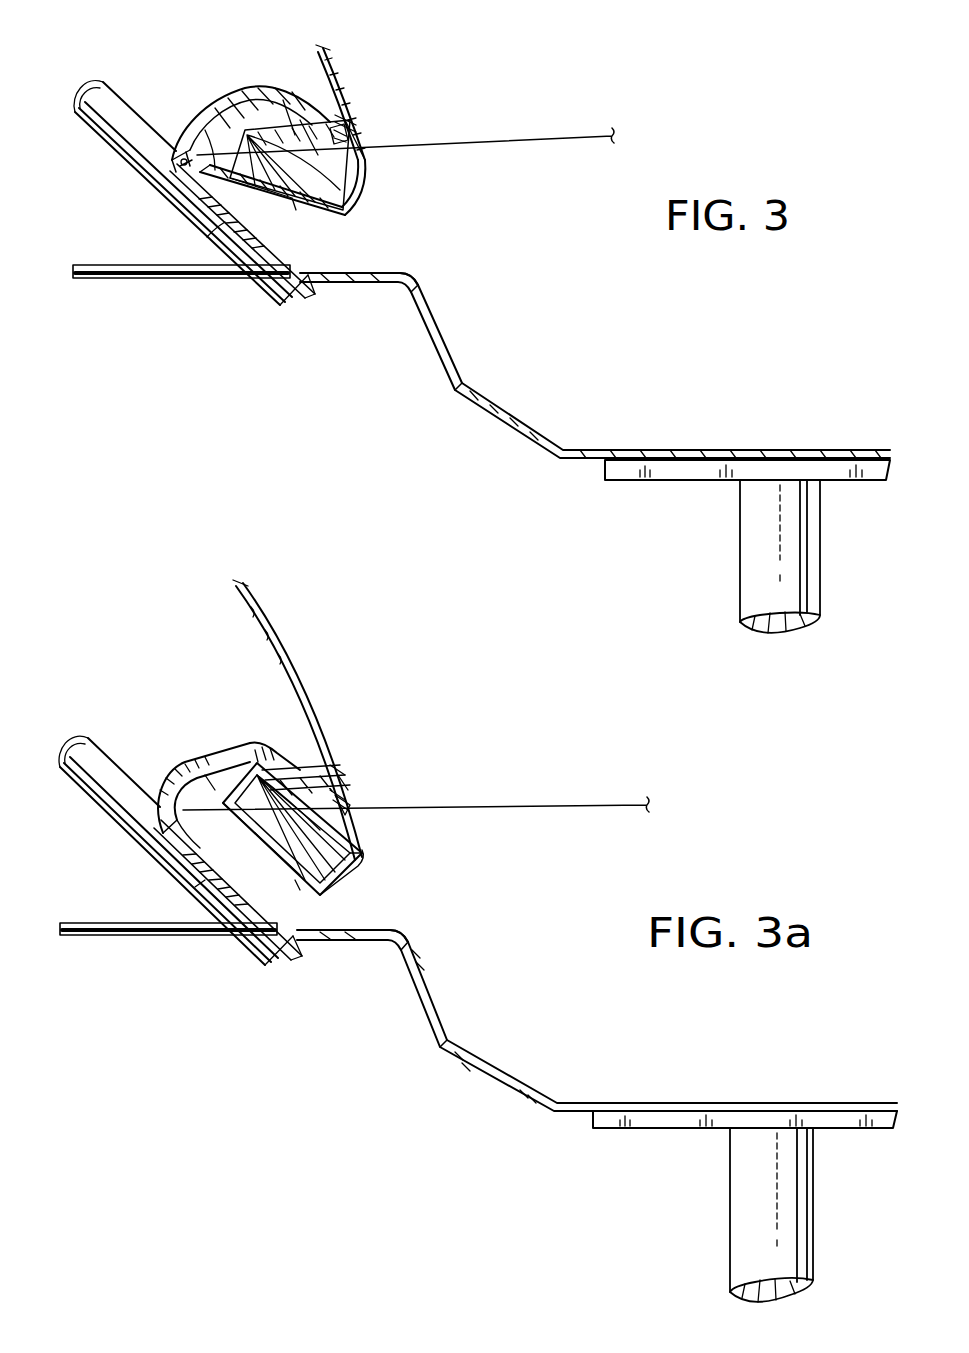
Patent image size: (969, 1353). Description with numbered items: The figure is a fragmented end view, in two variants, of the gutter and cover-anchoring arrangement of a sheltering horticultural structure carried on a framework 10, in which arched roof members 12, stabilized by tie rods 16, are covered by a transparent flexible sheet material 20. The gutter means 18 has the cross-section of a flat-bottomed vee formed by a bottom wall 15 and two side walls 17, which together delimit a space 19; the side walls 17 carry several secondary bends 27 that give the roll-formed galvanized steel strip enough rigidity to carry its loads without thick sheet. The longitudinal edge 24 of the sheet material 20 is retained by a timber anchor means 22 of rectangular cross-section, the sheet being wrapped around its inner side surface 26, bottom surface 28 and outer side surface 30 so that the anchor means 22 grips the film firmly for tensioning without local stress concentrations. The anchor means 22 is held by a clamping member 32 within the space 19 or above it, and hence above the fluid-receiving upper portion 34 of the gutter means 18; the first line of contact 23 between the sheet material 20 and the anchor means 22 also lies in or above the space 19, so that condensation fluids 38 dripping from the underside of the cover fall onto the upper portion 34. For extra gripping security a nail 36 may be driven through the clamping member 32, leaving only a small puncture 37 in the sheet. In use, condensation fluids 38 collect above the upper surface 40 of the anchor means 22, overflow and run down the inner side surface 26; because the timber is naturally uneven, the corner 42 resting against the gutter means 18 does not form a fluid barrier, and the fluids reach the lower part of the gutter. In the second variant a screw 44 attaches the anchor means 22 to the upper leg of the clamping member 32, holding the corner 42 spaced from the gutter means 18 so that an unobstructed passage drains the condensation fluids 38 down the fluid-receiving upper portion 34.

In FIG. 3, the framework 10 is at (743, 573).
In FIG. 3A, the framework 10 is at (740, 1250).
In FIG. 3, the roof member 12 is at (113, 88).
In FIG. 3A, the roof member 12 is at (105, 745).
In FIG. 3, the bottom wall 15 is at (590, 452).
In FIG. 3A, the bottom wall 15 is at (615, 1103).
In FIG. 3, the tie rod 16 is at (207, 278).
In FIG. 3A, the tie rod 16 is at (160, 935).
In FIG. 3, the side wall 17 is at (186, 214).
In FIG. 3A, the side wall 17 is at (150, 845).
In FIG. 3, the gutter means 18 is at (462, 353).
In FIG. 3A, the gutter means 18 is at (461, 993).
In FIG. 3, the space 19 is at (580, 143).
In FIG. 3A, the space 19 is at (530, 806).
In FIG. 3, the sheet material 20 is at (332, 66).
In FIG. 3A, the sheet material 20 is at (310, 700).
In FIG. 3, the anchor means 22 is at (340, 220).
In FIG. 3A, the anchor means 22 is at (330, 885).
In FIG. 3, the first line of contact 23 is at (366, 165).
In FIG. 3A, the first line of contact 23 is at (360, 856).
In FIG. 3, the longitudinal edge 24 is at (352, 183).
In FIG. 3A, the longitudinal edge 24 is at (358, 840).
In FIG. 3, the inner side surface 26 is at (240, 130).
In FIG. 3A, the inner side surface 26 is at (250, 742).
In FIG. 3, the secondary bend 27 is at (411, 292).
In FIG. 3A, the secondary bend 27 is at (395, 945).
In FIG. 3, the bottom surface 28 is at (292, 198).
In FIG. 3A, the bottom surface 28 is at (295, 880).
In FIG. 3, the outer side surface 30 is at (352, 208).
In FIG. 3A, the outer side surface 30 is at (358, 868).
In FIG. 3, the clamping member 32 is at (258, 88).
In FIG. 3A, the clamping member 32 is at (262, 760).
In FIG. 3, the fluid-receiving upper portion 34 is at (402, 270).
In FIG. 3A, the fluid-receiving upper portion 34 is at (390, 932).
In FIG. 3, the nail 36 is at (356, 138).
In FIG. 3, the puncture 37 is at (355, 118).
In FIG. 3A, the puncture 37 is at (345, 795).
In FIG. 3, the condensation fluids 38 is at (283, 100).
In FIG. 3A, the condensation fluids 38 is at (250, 625).
In FIG. 3, the upper surface 40 is at (305, 120).
In FIG. 3A, the upper surface 40 is at (338, 775).
In FIG. 3, the corner 42 is at (176, 172).
In FIG. 3A, the corner 42 is at (205, 775).
In FIG. 3A, the screw 44 is at (350, 798).